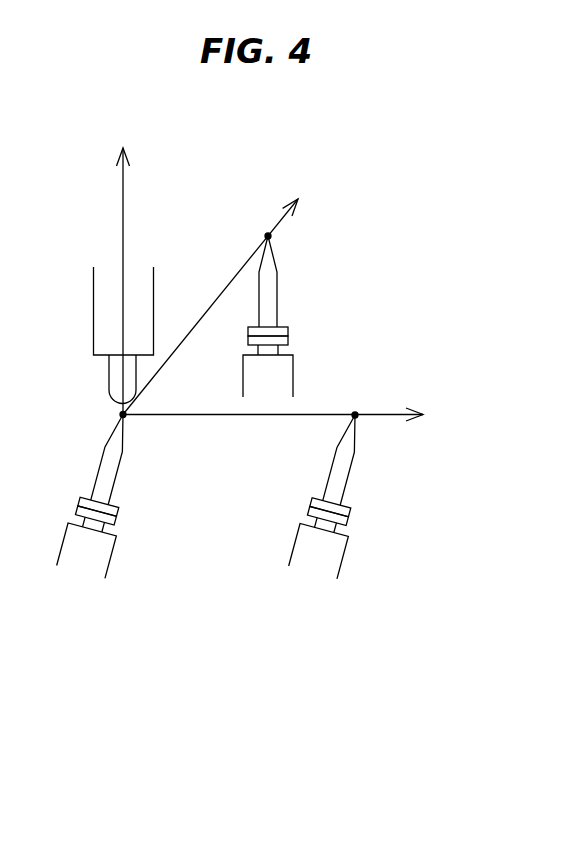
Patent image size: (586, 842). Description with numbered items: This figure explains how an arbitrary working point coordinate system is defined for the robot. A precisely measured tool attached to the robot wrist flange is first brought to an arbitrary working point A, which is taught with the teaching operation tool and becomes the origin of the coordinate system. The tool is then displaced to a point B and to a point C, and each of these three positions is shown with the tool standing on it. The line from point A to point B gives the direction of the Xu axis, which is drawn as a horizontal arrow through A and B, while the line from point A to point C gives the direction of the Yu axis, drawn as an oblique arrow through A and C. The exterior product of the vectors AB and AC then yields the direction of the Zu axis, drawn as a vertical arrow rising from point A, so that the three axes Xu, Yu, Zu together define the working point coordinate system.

The point A is at (102, 493).
The point B is at (334, 485).
The point C is at (268, 305).
The Xu axis Xu is at (289, 416).
The Yu axis Yu is at (218, 297).
The Zu axis Zu is at (124, 268).